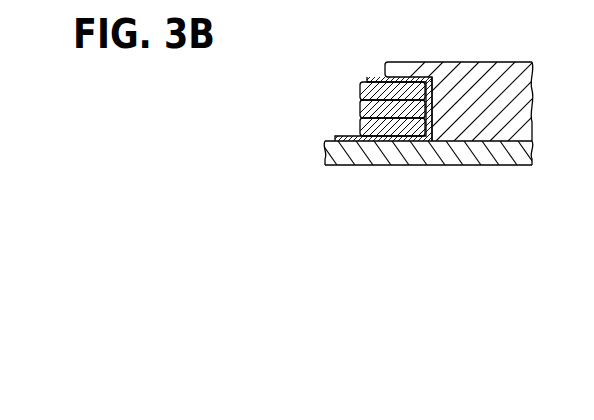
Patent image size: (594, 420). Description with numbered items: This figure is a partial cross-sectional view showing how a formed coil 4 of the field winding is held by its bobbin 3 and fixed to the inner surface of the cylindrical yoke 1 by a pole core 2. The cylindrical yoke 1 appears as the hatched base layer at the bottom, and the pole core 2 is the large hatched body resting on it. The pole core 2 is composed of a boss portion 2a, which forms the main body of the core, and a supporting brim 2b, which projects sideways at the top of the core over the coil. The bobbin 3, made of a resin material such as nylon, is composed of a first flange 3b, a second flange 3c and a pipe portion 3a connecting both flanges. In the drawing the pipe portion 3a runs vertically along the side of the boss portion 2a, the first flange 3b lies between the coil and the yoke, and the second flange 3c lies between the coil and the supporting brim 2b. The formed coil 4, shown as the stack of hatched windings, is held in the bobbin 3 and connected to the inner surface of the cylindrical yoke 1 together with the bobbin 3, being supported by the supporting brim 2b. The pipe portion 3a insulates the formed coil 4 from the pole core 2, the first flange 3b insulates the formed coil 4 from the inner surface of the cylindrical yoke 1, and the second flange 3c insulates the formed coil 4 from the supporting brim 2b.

The cylindrical yoke 1 is at (517, 161).
The pole core 2 is at (515, 63).
The boss portion 2a is at (505, 105).
The supporting brim 2b is at (389, 69).
The bobbin 3 is at (338, 143).
The pipe portion 3a is at (432, 106).
The first flange 3b is at (382, 141).
The second flange 3c is at (400, 79).
The formed coil 4 is at (353, 82).